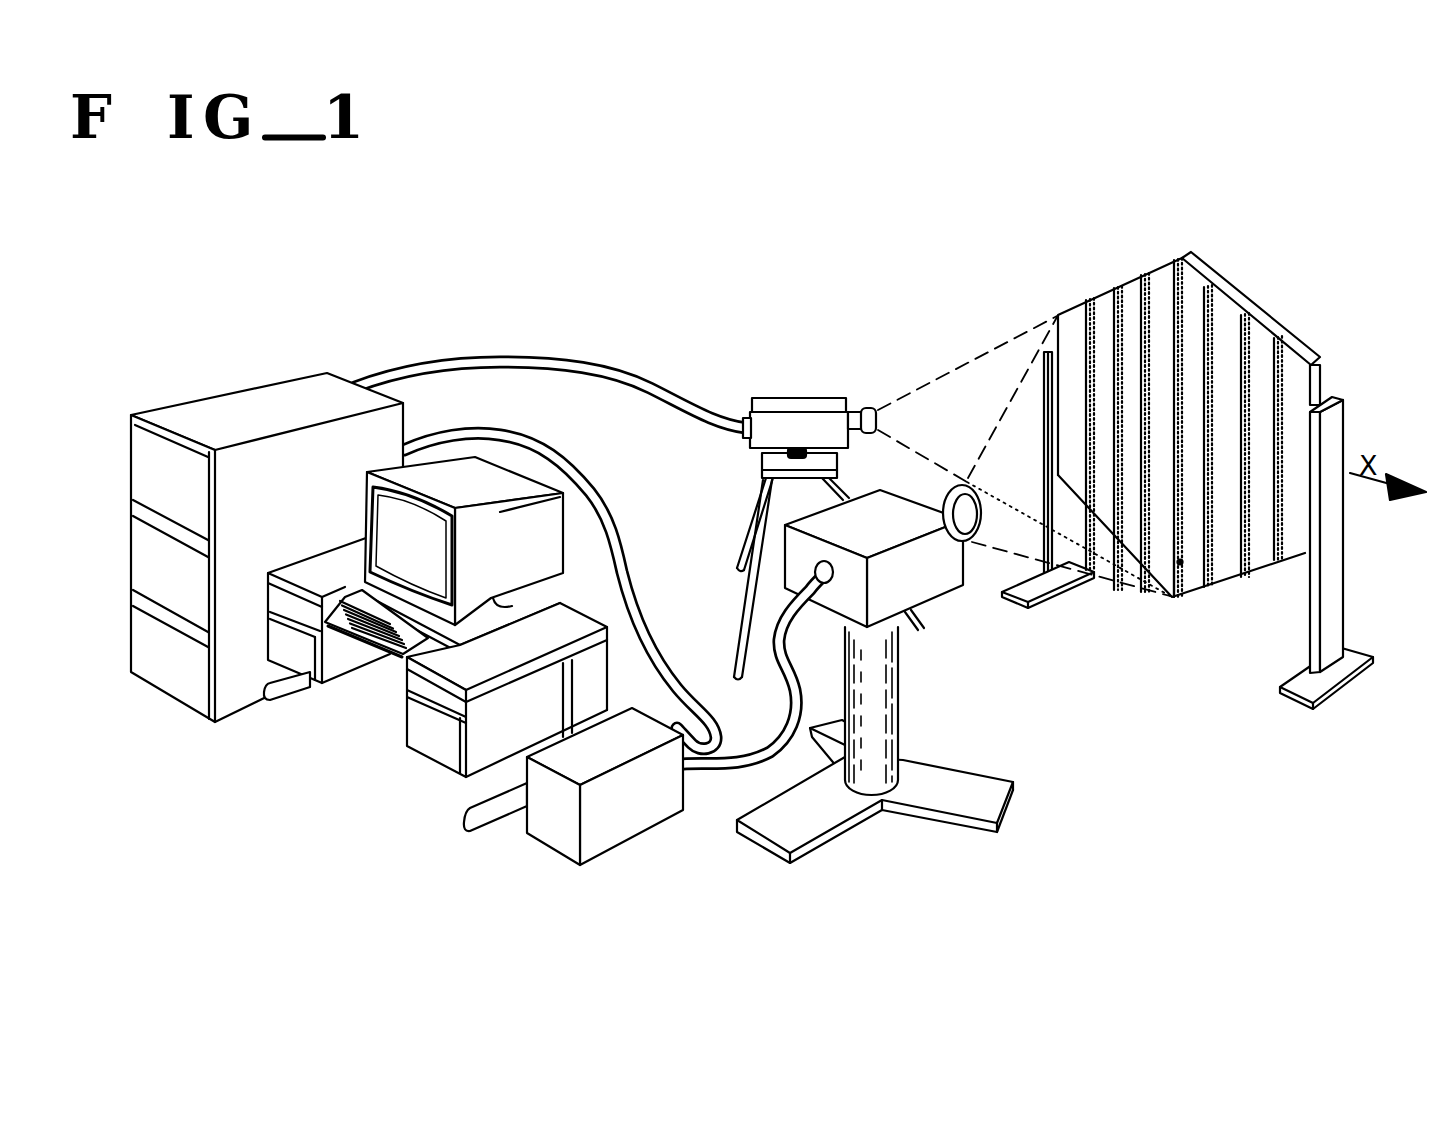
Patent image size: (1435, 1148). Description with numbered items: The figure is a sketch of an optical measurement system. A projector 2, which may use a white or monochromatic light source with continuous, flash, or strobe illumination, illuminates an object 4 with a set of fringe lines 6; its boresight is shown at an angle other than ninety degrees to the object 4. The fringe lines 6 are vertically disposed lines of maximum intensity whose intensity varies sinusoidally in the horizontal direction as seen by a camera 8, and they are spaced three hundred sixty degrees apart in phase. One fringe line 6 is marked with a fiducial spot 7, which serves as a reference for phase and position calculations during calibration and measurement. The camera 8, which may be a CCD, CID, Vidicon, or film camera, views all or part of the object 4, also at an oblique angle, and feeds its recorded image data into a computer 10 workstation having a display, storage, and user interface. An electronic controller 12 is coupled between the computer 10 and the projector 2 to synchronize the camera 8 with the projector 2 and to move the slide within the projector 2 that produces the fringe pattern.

The projector 2 is at (948, 593).
The object 4 is at (1100, 292).
The fringe lines 6 is at (1187, 278).
The fiducial spot 7 is at (1180, 562).
The camera 8 is at (767, 397).
The computer 10 is at (503, 468).
The electronic controller 12 is at (543, 847).